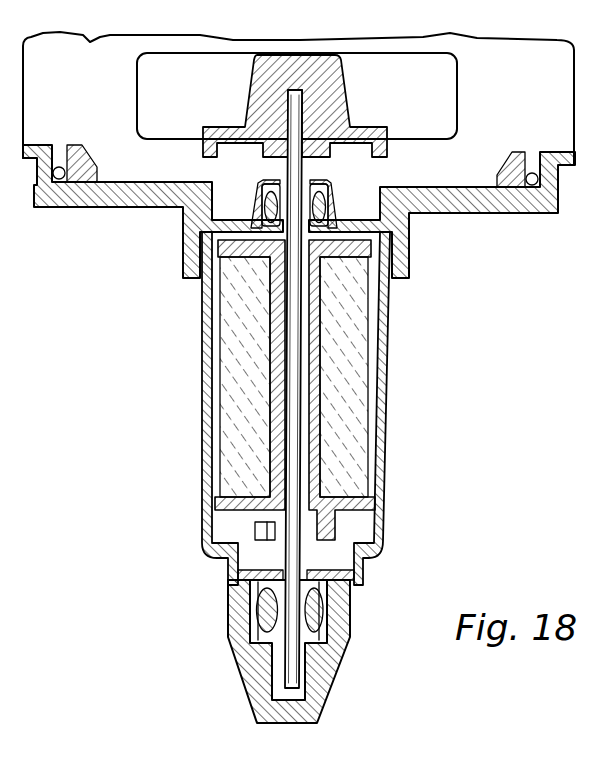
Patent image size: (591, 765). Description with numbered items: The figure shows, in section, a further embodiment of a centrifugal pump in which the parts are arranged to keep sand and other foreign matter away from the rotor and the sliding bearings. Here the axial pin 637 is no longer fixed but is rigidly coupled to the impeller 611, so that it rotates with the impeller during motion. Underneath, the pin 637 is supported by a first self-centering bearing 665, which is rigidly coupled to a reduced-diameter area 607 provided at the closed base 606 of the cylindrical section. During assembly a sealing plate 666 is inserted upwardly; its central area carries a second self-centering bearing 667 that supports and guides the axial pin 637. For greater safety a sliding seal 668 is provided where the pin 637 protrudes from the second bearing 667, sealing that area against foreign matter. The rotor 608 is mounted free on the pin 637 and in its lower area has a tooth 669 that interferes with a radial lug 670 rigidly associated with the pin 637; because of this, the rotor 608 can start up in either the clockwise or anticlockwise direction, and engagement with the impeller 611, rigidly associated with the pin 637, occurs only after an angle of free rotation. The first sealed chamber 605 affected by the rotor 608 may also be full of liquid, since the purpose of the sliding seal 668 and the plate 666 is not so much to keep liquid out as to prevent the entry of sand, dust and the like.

The impeller 611 is at (470, 108).
The sliding seal 668 is at (312, 180).
The second self-centering bearing 667 is at (257, 195).
The sealing plate 666 is at (392, 246).
The first sealed chamber 605 is at (368, 330).
The axial pin 637 is at (298, 416).
The rotor 608 is at (353, 475).
The radial lug 670 is at (255, 534).
The tooth 669 is at (337, 522).
The first self-centering bearing 665 is at (323, 617).
The closed base 606 is at (238, 640).
The reduced-diameter area 607 is at (350, 657).